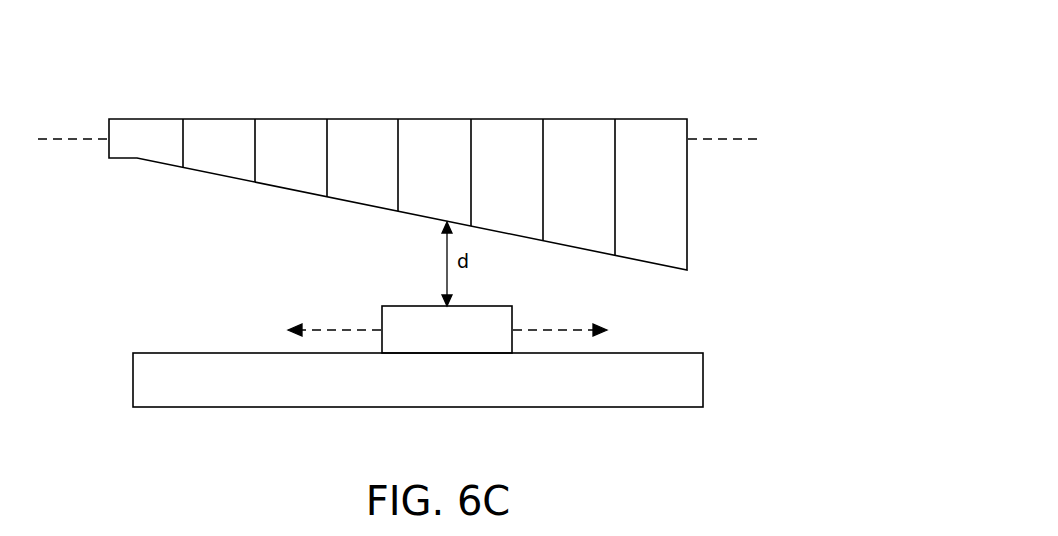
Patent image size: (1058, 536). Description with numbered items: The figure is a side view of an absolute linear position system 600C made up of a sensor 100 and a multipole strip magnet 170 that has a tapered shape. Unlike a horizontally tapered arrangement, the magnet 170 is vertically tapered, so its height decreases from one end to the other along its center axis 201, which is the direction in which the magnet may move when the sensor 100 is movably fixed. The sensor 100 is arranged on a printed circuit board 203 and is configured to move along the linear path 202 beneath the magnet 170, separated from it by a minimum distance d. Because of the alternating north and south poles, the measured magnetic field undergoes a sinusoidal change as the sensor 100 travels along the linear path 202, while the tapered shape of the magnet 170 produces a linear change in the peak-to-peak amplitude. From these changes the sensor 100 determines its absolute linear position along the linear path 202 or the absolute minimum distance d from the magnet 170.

The absolute linear position system 600C is at (147, 45).
The multipole strip magnet 170 is at (687, 238).
The center axis 201 is at (742, 137).
The sensor 100 is at (497, 305).
The linear path 202 is at (553, 330).
The printed circuit board 203 is at (703, 378).